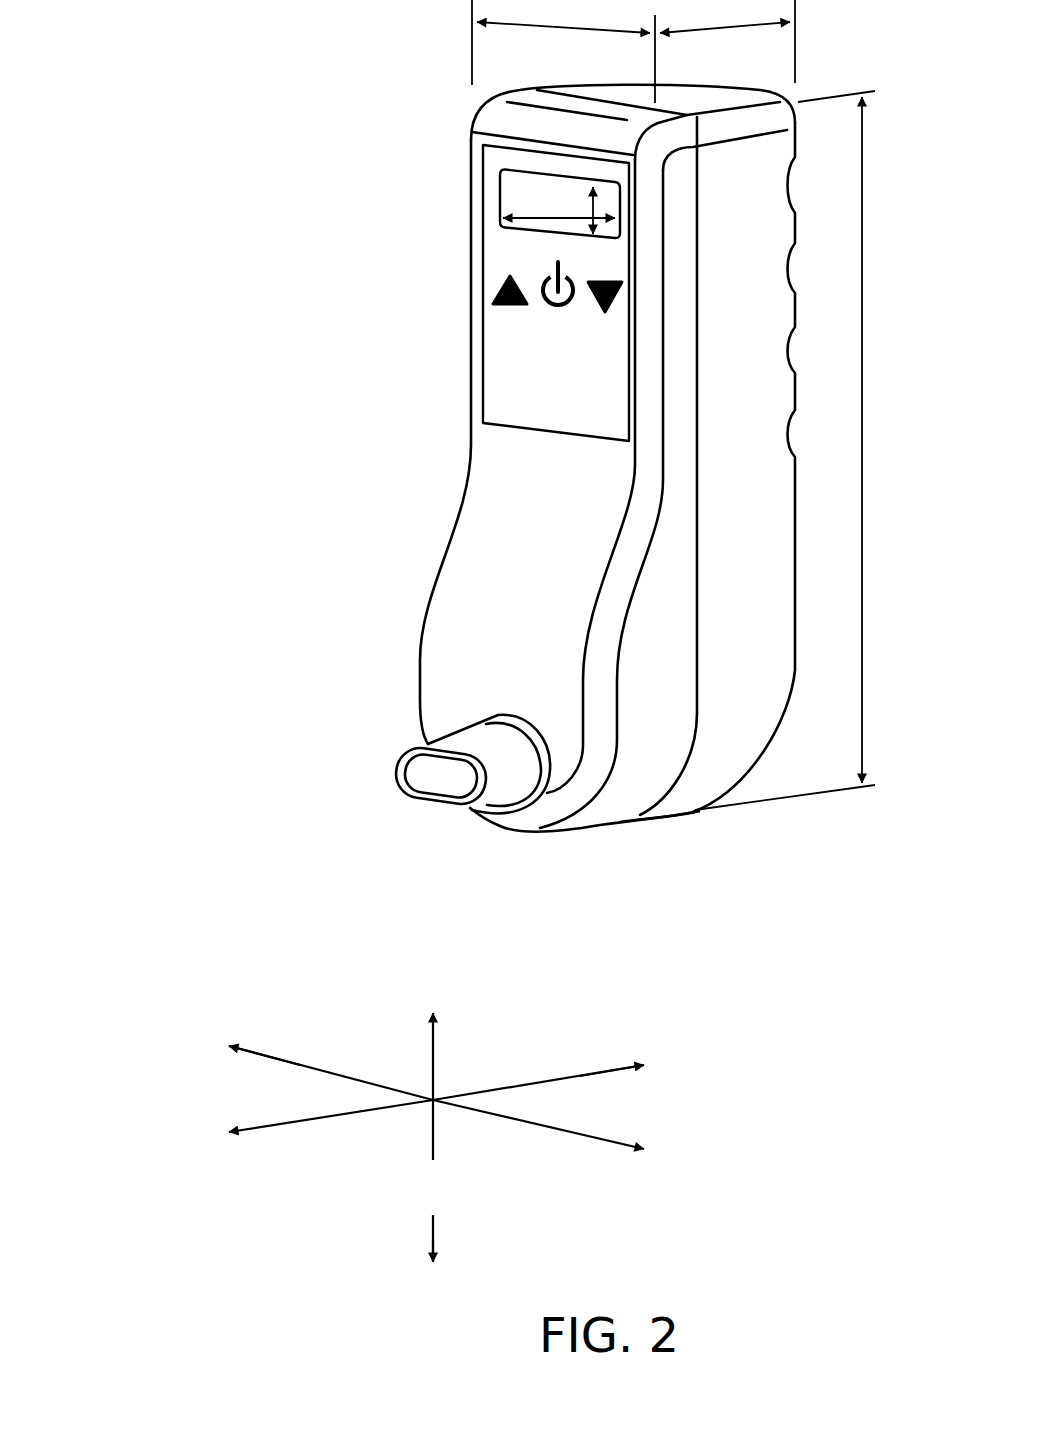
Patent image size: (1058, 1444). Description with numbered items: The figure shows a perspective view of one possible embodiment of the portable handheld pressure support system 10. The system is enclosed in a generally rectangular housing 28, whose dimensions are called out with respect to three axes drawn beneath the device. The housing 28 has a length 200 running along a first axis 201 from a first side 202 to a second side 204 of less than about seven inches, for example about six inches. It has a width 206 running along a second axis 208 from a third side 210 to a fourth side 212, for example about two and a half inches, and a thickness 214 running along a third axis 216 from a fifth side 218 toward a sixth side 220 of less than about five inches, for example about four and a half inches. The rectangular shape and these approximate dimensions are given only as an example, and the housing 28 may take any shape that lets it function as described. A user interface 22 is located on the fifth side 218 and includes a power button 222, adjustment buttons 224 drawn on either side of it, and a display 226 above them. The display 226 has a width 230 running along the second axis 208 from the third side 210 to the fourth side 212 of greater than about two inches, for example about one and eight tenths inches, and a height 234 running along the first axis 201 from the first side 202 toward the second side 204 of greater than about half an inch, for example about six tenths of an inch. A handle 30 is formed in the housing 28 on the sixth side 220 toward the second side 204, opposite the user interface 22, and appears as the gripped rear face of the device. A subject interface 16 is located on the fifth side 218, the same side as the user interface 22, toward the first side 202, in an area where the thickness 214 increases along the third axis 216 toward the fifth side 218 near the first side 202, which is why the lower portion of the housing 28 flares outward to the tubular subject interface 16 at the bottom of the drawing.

The portable handheld pressure support system 10 is at (286, 130).
The subject interface 16 is at (434, 774).
The user interface 22 is at (541, 417).
The housing 28 is at (659, 824).
The handle 30 is at (790, 265).
The length 200 is at (803, 450).
The first axis 201 is at (433, 1181).
The first side 202 is at (433, 1282).
The second side 204 is at (432, 1025).
The width 206 is at (563, 51).
The second axis 208 is at (331, 1067).
The third side 210 is at (601, 1147).
The fourth side 212 is at (193, 1033).
The thickness 214 is at (727, 41).
The third axis 216 is at (538, 1080).
The fifth side 218 is at (272, 1134).
The sixth side 220 is at (674, 1050).
The power button 222 is at (537, 266).
The adjustment buttons 224 is at (594, 315).
The display 226 is at (494, 170).
The width 230 is at (559, 201).
The height 234 is at (595, 200).